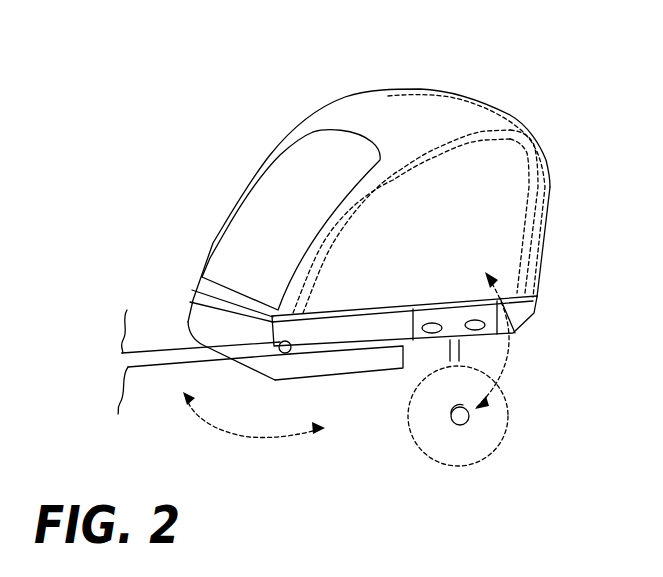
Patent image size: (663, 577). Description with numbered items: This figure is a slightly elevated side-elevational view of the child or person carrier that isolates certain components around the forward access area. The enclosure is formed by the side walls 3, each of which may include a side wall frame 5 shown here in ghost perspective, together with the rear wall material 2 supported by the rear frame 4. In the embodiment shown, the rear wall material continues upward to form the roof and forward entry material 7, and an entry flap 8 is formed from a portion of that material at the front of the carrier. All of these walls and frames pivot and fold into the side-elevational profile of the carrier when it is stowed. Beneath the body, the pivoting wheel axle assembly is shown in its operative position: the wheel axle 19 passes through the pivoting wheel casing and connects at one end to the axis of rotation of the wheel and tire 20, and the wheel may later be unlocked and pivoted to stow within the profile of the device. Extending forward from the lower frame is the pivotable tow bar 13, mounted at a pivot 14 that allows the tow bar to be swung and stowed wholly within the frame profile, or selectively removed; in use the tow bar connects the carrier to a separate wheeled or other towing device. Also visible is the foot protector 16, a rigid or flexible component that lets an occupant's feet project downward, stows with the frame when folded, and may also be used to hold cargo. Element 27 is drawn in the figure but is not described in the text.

The rear wall material 2 is at (546, 212).
The side wall 3 is at (513, 170).
The rear frame 4 is at (432, 96).
The side wall frame 5 is at (436, 148).
The roof and forward entry material 7 is at (353, 117).
The entry flap 8 is at (280, 187).
The tow bar 13 is at (160, 358).
The pivot 14 is at (289, 353).
The foot protector 16 is at (323, 363).
The wheel axle 19 is at (457, 356).
The wheel and tire 20 is at (473, 452).
The base plate 27 is at (386, 338).